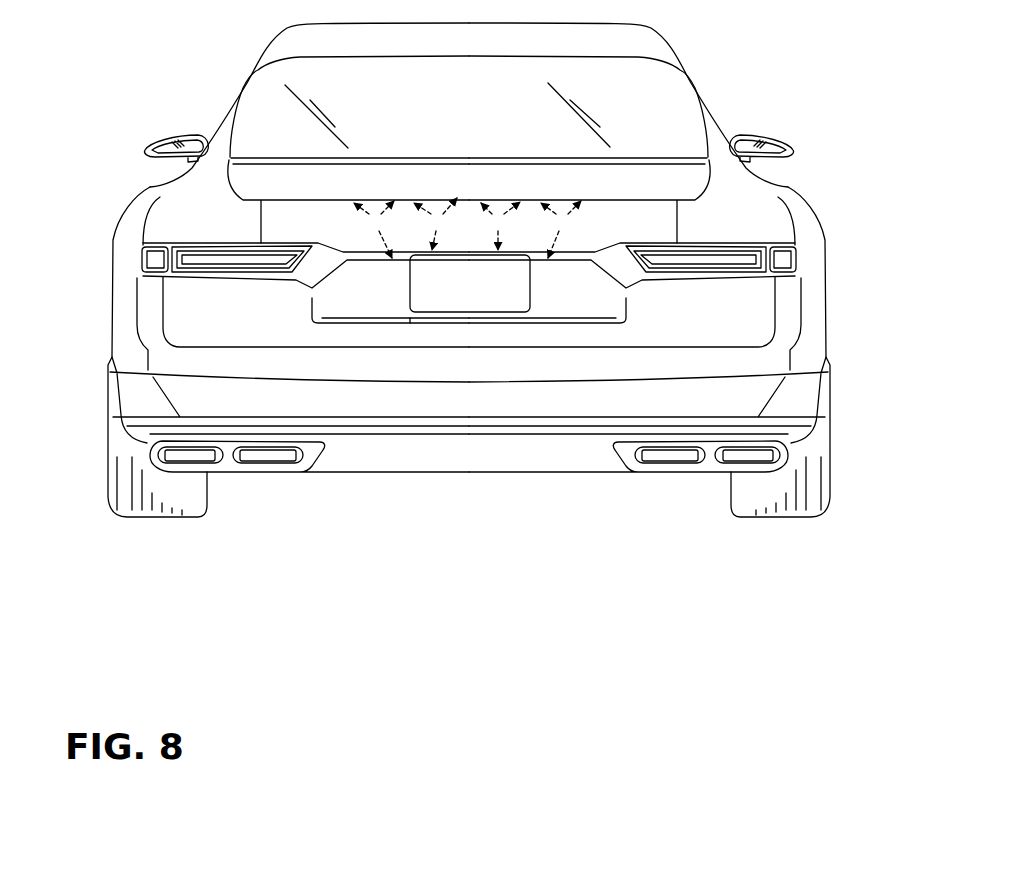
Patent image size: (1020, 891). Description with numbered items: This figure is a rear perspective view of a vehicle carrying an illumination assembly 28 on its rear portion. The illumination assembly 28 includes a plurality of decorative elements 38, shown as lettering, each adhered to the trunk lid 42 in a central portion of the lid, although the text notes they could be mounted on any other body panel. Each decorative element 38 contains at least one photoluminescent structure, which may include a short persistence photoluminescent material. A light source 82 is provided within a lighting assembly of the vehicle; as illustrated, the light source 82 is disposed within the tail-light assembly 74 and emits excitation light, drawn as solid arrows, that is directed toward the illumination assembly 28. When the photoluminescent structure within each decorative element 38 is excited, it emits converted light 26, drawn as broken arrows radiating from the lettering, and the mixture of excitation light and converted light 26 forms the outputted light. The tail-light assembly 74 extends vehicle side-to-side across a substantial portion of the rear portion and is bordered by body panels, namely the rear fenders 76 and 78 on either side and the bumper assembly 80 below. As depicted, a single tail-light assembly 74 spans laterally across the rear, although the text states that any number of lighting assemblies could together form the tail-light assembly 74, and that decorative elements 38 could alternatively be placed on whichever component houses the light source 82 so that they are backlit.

The trunk lid 42 is at (285, 213).
The rear fender 76 is at (117, 247).
The light source 82 is at (205, 262).
The tail-light assembly 74 is at (771, 258).
The converted light 26 is at (680, 228).
The rear fender 78 is at (815, 285).
The bumper assembly 80 is at (573, 398).
The illumination assembly 28 is at (566, 210).
The decorative element 38 is at (375, 230).